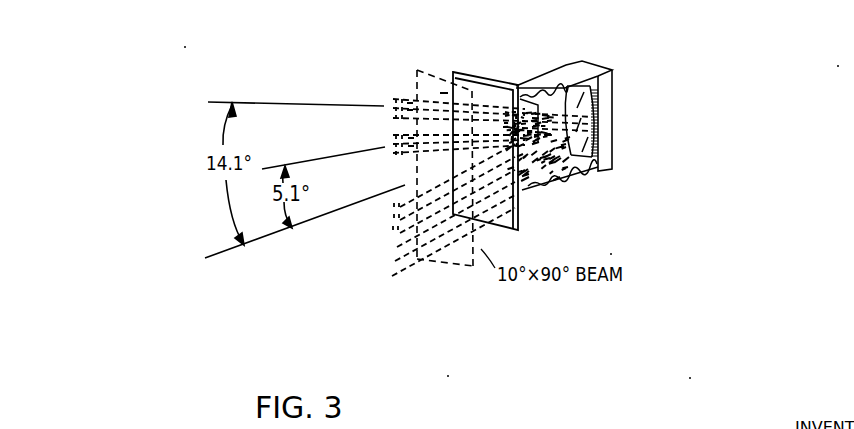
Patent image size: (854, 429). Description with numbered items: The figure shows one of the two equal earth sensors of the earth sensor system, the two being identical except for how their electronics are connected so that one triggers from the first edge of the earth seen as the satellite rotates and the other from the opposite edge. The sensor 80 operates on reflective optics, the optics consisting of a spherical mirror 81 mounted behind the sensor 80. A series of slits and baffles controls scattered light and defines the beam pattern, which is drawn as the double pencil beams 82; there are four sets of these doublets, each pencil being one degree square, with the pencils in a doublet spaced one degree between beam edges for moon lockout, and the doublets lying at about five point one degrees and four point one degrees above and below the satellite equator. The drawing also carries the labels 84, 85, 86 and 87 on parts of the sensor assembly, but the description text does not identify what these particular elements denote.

The sensor 80 is at (549, 71).
The spherical mirror 81 is at (605, 147).
The double pencil beams 82 is at (396, 278).
The lamp 84 is at (533, 182).
The reflector 85 is at (547, 158).
The front aperture plate 86 is at (518, 83).
The aperture plane 87 is at (436, 76).